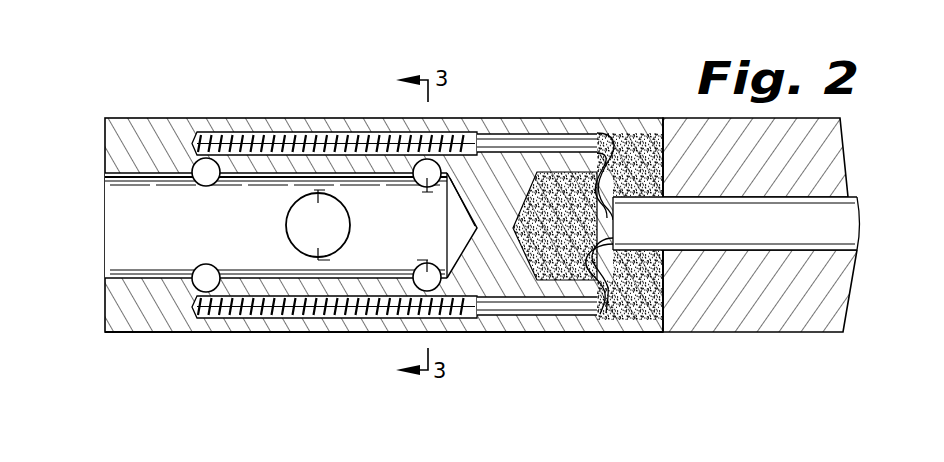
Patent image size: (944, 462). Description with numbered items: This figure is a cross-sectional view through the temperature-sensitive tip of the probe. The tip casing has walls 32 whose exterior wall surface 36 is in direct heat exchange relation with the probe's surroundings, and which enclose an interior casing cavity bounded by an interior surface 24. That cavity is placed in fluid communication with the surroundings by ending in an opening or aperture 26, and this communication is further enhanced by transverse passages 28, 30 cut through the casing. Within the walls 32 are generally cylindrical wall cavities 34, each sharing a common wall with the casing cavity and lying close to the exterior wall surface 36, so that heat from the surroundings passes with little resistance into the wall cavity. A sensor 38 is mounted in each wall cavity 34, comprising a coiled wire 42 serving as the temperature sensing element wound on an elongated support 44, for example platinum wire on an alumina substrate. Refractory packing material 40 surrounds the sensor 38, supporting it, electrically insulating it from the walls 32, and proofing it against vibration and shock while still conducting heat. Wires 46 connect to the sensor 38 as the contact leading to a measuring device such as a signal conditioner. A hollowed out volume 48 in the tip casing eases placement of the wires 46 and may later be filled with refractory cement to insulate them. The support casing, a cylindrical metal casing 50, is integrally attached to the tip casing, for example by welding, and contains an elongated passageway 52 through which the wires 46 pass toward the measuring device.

The interior surface 24 is at (120, 183).
The opening or aperture 26 is at (118, 238).
The transverse passage 28 is at (198, 160).
The transverse passage 30 is at (305, 240).
The tip casing walls 32 is at (192, 128).
The generally cylindrical wall cavity 34 is at (350, 300).
The exterior wall surface 36 is at (222, 334).
The sensor 38 is at (318, 300).
The refractory packing material 40 is at (513, 300).
The coiled wire 42 is at (290, 135).
The elongated support 44 is at (395, 290).
The wires 46 is at (613, 282).
The hollowed out volume 48 is at (637, 155).
The cylindrical metal casing 50 is at (813, 325).
The elongated passageway 52 is at (743, 242).